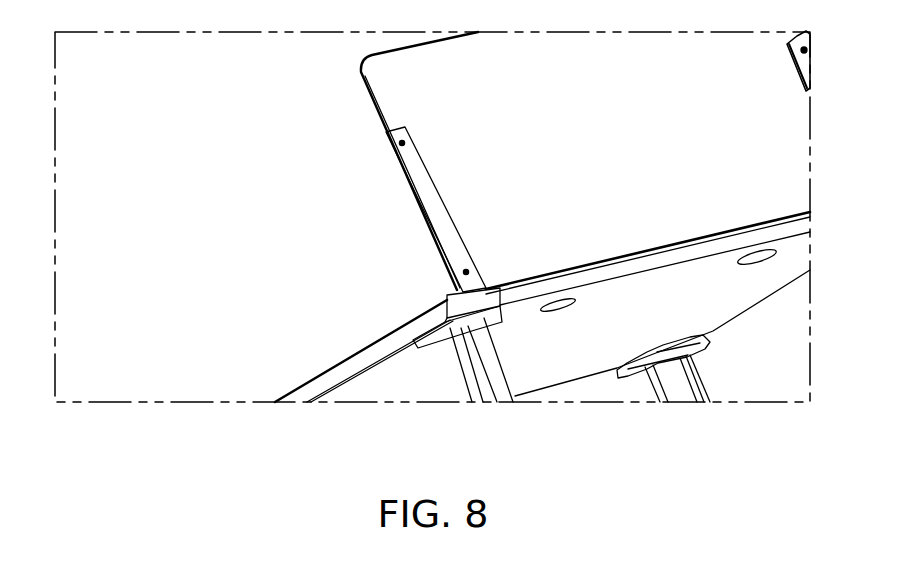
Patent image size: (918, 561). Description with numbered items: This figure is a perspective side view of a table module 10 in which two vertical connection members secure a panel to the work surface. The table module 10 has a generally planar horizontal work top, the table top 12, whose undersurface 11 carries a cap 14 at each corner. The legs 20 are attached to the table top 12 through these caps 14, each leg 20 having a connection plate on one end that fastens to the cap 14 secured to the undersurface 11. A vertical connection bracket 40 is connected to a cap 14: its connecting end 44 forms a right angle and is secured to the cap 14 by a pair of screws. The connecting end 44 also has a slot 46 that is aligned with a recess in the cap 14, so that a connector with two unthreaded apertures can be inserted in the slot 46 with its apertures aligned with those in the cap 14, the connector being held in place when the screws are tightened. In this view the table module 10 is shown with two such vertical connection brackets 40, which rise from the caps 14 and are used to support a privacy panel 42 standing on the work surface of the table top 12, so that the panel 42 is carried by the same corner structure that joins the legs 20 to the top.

The table module 10 is at (262, 219).
The undersurface 11 is at (372, 382).
The table top 12 is at (325, 375).
The cap structure 14 is at (627, 378).
The leg 20 is at (463, 370).
The vertical connection bracket 40 is at (426, 200).
The privacy panel 42 is at (386, 95).
The connecting end 44 is at (490, 326).
The slot 46 is at (503, 316).